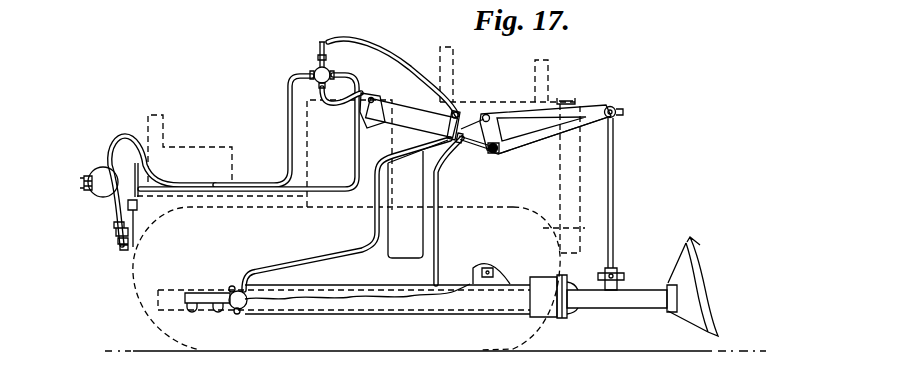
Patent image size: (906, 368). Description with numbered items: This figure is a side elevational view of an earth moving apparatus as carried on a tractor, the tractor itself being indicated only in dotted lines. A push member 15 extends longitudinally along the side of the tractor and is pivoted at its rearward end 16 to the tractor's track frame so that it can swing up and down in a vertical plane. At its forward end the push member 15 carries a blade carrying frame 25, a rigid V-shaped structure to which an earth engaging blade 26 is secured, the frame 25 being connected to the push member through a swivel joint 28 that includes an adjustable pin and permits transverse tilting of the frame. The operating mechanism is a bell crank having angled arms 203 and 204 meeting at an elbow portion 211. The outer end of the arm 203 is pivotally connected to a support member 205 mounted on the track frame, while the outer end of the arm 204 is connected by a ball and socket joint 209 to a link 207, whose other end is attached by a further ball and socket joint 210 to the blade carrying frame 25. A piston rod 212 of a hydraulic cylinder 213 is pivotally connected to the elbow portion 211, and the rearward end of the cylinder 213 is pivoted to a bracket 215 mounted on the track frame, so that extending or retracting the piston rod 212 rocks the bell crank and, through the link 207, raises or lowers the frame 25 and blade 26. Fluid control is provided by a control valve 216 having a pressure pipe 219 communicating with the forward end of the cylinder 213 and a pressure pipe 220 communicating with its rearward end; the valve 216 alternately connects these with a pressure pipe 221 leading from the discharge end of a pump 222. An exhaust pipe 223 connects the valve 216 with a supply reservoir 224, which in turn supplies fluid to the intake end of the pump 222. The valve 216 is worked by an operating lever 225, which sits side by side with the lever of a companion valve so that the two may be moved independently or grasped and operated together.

The push member 15 is at (458, 307).
The rearward end 16 is at (249, 307).
The blade carrying frame 25 is at (633, 300).
The earth engaging blade 26 is at (690, 243).
The swivel joint 28 is at (556, 317).
The angled arm 203 is at (492, 112).
The angled arm 204 is at (541, 138).
The support member 205 is at (378, 223).
The link 207 is at (613, 178).
The ball and socket joint 209 is at (616, 107).
The ball and socket joint 210 is at (617, 270).
The elbow portion 211 is at (497, 153).
The piston rod 212 is at (462, 150).
The hydraulic cylinder 213 is at (402, 105).
The bracket 215 is at (351, 119).
The control valve 216 is at (312, 74).
The pressure pipe 219 is at (363, 50).
The pressure pipe 220 is at (331, 104).
The pressure pipe 221 is at (287, 95).
The pump 222 is at (128, 248).
The exhaust pipe 223 is at (374, 101).
The supply reservoir 224 is at (100, 173).
The operating lever 225 is at (321, 40).